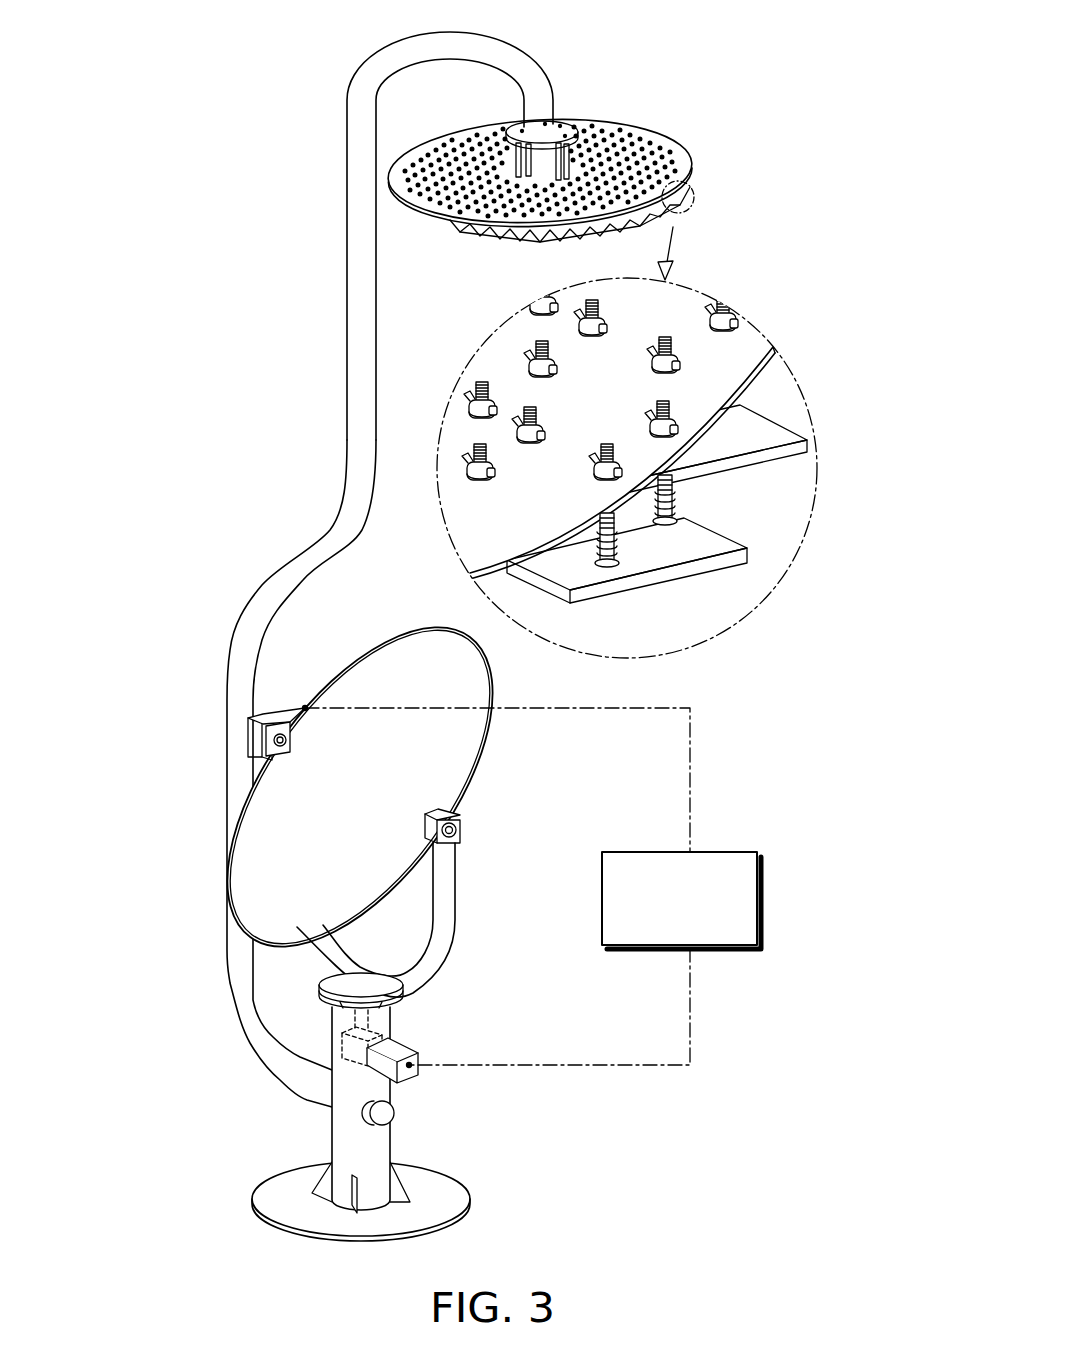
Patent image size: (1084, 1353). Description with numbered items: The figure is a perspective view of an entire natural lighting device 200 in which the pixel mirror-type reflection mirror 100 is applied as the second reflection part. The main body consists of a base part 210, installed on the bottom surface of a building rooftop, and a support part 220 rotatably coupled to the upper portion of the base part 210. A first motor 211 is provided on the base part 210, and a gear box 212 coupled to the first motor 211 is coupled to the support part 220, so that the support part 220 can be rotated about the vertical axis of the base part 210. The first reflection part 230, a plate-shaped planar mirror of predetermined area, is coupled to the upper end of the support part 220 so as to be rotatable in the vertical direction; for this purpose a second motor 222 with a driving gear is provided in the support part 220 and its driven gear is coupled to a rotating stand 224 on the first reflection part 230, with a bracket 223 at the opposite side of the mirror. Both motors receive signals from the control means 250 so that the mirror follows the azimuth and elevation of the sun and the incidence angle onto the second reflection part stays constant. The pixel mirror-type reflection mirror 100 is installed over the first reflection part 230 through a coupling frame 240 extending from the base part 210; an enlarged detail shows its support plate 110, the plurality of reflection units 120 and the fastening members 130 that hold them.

The pixel mirror-type reflection mirror 100 is at (662, 128).
The support plate 110 is at (727, 377).
The reflection units 120 is at (658, 577).
The fastening members 130 is at (684, 497).
The natural lighting device 200 is at (220, 228).
The base part 210 is at (355, 1145).
The first motor 211 is at (418, 1075).
The gear box 212 is at (343, 1043).
The support part 220 is at (437, 960).
The second motor 222 is at (294, 712).
The bracket 223 is at (255, 737).
The rotating stand 224 is at (462, 828).
The first reflection part 230 is at (268, 815).
The coupling frame 240 is at (257, 612).
The control means 250 is at (718, 850).